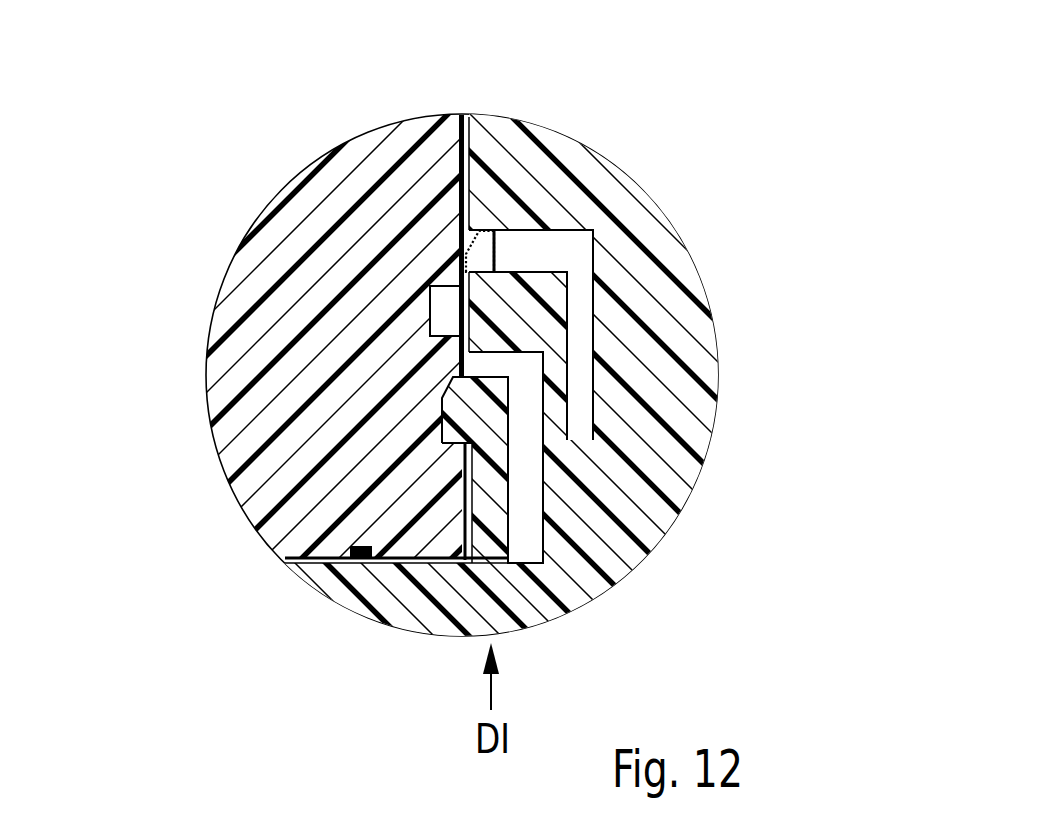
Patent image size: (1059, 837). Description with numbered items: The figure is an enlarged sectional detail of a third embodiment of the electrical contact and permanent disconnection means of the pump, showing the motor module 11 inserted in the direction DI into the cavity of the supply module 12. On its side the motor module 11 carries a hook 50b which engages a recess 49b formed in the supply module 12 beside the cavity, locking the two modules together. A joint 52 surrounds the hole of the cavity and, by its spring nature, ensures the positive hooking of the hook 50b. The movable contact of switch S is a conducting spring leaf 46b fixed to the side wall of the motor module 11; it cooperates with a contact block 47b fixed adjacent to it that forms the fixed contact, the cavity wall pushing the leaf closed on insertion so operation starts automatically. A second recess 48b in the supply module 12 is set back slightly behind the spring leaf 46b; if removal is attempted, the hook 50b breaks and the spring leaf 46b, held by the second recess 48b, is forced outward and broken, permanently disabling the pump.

The motor module 11 is at (627, 550).
The supply module 12 is at (257, 480).
The conducting spring leaf 46b is at (481, 224).
The contact block 47b is at (476, 274).
The second recess 48b is at (445, 309).
The recess 49b is at (450, 368).
The hook 50b is at (487, 414).
The joint 52 is at (357, 563).